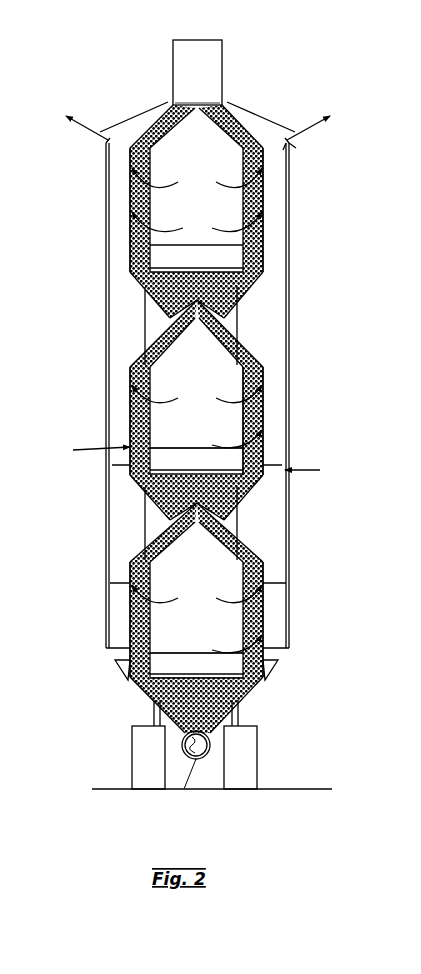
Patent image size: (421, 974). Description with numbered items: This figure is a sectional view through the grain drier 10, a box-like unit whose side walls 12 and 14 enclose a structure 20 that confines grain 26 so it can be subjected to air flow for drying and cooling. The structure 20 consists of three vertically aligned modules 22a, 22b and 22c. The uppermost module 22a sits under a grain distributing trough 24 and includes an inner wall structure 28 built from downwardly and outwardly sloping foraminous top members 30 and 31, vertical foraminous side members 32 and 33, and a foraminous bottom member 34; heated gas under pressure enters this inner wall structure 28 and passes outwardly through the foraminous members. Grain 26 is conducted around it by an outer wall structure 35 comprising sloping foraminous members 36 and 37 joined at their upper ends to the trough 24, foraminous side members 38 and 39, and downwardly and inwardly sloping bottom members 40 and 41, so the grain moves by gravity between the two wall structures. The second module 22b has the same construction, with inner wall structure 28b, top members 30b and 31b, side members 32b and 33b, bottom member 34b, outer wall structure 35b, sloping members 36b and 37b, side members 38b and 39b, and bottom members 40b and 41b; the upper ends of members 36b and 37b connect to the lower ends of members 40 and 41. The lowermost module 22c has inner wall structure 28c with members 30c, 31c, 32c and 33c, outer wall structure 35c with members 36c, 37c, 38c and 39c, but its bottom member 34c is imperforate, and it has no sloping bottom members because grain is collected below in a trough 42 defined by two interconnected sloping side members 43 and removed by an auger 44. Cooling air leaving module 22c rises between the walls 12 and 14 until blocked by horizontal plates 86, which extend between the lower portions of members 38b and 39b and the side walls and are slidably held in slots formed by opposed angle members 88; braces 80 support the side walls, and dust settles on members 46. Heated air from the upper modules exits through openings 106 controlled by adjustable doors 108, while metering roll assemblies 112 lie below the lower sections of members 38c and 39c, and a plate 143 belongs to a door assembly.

The grain drier 10 is at (104, 148).
The side wall 12 is at (289, 372).
The side wall 14 is at (106, 362).
The grain confining structure 20 is at (266, 430).
The uppermost module 22a is at (250, 187).
The second module 22b is at (262, 403).
The lowermost module 22c is at (262, 605).
The grain distributing trough 24 is at (222, 58).
The grain 26 is at (185, 300).
The inner wall structure 28 is at (150, 197).
The inner wall structure 28b is at (152, 400).
The inner wall structure 28c is at (152, 610).
The foraminous top member 30 is at (165, 125).
The foraminous top member 31 is at (228, 125).
The foraminous top member 30b is at (168, 338).
The foraminous top member 31b is at (226, 340).
The foraminous top member 30c is at (168, 545).
The foraminous top member 31c is at (228, 545).
The foraminous side member 32 is at (152, 207).
The foraminous side member 33 is at (240, 202).
The foraminous side member 32b is at (165, 420).
The foraminous side member 33b is at (240, 433).
The foraminous side member 32c is at (150, 635).
The foraminous side member 33c is at (243, 632).
The foraminous bottom member 34 is at (226, 290).
The foraminous bottom member 34b is at (232, 485).
The imperforate bottom member 34c is at (232, 700).
The outer wall structure 35 is at (128, 258).
The outer wall structure 35b is at (128, 400).
The outer wall structure 35c is at (128, 612).
The sloping foraminous member 36 is at (144, 126).
The sloping foraminous member 36b is at (130, 360).
The sloping foraminous member 36c is at (128, 560).
The sloping foraminous member 37 is at (251, 126).
The sloping foraminous member 37b is at (263, 345).
The sloping foraminous member 37c is at (262, 552).
The foraminous side member 38 is at (132, 243).
The foraminous side member 38b is at (130, 425).
The foraminous side member 38c is at (130, 635).
The foraminous side member 39 is at (256, 242).
The foraminous side member 39b is at (266, 452).
The foraminous side member 39c is at (266, 637).
The sloping foraminous bottom member 40 is at (143, 290).
The sloping foraminous bottom member 40b is at (143, 505).
The sloping foraminous bottom member 41 is at (240, 300).
The sloping foraminous bottom member 41b is at (240, 512).
The trough 42 is at (204, 734).
The sloping side member 43 is at (262, 755).
The auger 44 is at (184, 789).
The settling member 46 is at (270, 660).
The brace 80 is at (266, 583).
The plate 86 is at (266, 468).
The angle member 88 is at (200, 461).
The opening 106 is at (292, 146).
The door 108 is at (264, 114).
The metering roll assembly 112 is at (258, 690).
The plate 143 is at (236, 678).